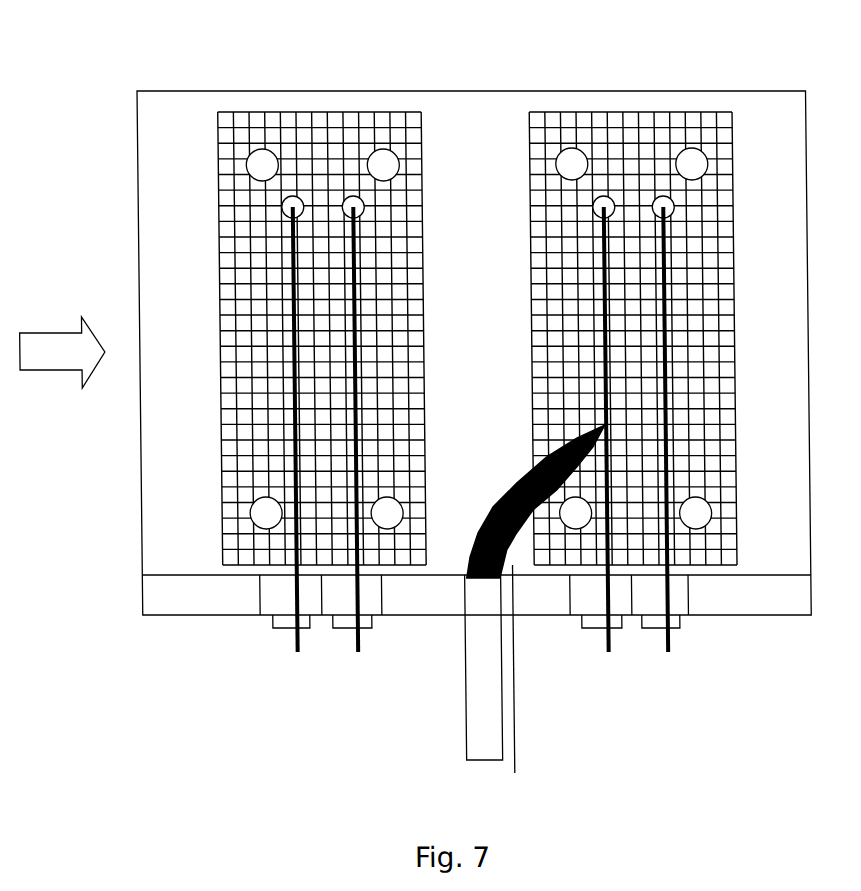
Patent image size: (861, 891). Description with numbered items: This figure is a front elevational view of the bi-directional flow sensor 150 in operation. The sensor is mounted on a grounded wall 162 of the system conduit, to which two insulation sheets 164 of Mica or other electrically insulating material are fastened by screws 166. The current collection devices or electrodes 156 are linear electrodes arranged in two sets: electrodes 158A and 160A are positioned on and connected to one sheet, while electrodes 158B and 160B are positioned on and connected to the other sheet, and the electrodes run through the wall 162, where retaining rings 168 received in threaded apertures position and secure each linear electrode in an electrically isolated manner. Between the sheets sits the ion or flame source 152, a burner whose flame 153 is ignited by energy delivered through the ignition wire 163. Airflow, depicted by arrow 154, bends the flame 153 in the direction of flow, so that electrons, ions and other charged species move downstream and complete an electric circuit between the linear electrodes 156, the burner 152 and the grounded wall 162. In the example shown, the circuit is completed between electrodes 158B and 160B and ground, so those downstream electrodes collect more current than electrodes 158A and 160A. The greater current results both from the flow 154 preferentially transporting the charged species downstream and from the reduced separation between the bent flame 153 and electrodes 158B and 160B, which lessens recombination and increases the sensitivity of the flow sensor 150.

The bi-directional flow sensor 150 is at (434, 414).
The ion or flame source 152 is at (458, 703).
The flame 153 is at (461, 528).
The flow 154 is at (70, 364).
The electrodes 156 is at (241, 719).
The first set electrode 158A is at (354, 630).
The first set electrode 158B is at (605, 648).
The second set electrode 160A is at (287, 592).
The second set electrode 160B is at (660, 602).
The wall 162 is at (458, 91).
The ignition wire 163 is at (506, 745).
The insulation sheets 164 is at (216, 183).
The screws 166 is at (253, 148).
The retaining ring 168 is at (302, 628).